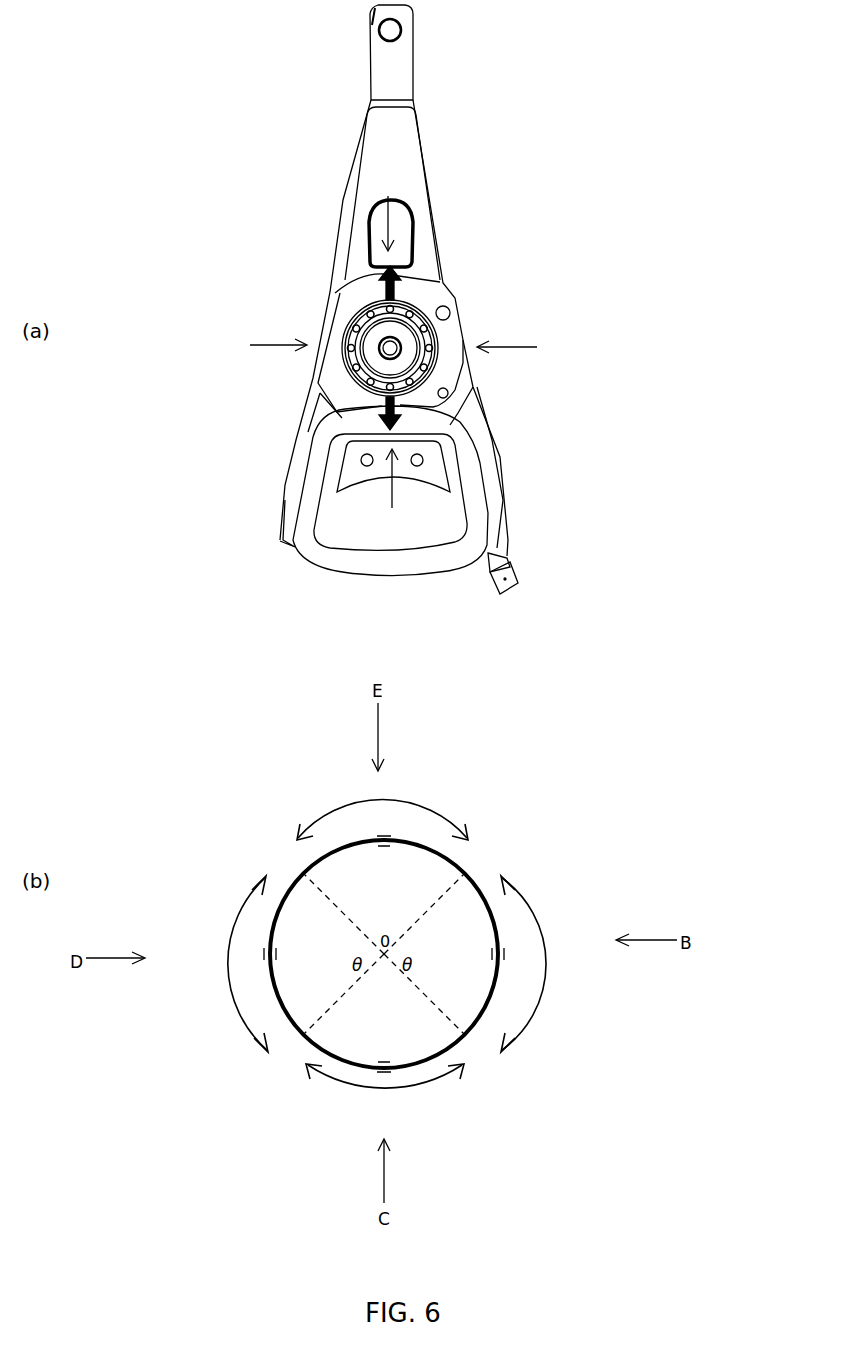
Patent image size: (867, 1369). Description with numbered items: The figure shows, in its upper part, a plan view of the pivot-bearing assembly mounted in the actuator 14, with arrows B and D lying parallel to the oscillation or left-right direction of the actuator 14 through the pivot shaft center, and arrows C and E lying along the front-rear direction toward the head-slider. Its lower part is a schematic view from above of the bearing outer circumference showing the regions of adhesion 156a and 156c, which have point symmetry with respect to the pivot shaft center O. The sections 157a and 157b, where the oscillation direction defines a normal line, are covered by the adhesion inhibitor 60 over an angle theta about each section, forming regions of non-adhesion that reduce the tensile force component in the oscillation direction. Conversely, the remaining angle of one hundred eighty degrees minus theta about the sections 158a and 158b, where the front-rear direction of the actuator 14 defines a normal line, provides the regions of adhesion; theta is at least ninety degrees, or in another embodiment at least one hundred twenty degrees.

The actuator 14 is at (303, 114).
The adhesion inhibitor 60 is at (385, 954).
The region of adhesion 156a is at (382, 808).
The region of adhesion 156c is at (385, 1095).
The section of the outer circumferential surface 157a is at (433, 913).
The section of the outer circumferential surface 157b is at (333, 915).
The section of the outer circumferential surface 158a is at (414, 1004).
The section of the outer circumferential surface 158b is at (353, 948).